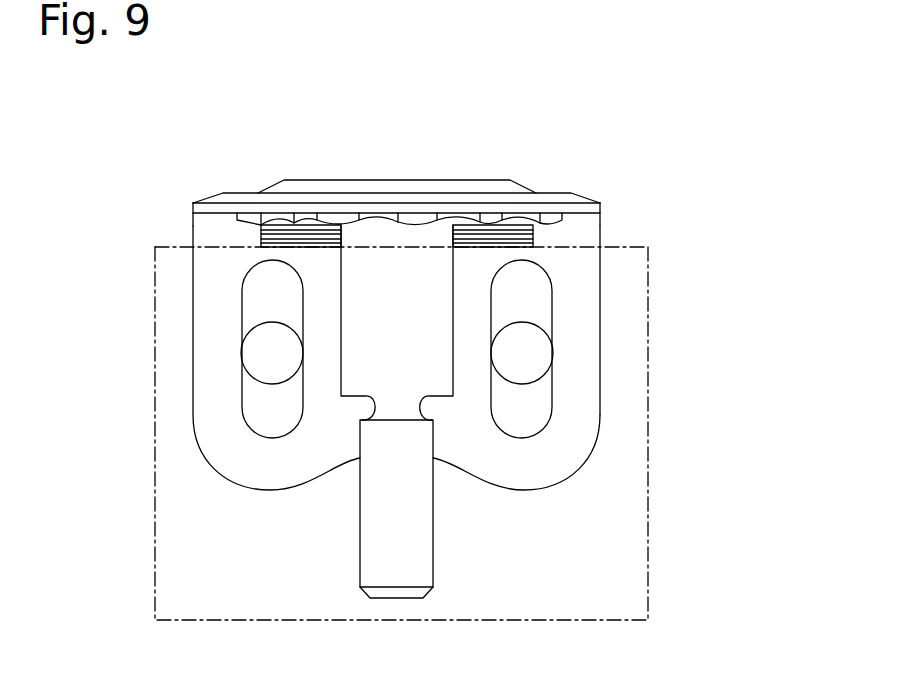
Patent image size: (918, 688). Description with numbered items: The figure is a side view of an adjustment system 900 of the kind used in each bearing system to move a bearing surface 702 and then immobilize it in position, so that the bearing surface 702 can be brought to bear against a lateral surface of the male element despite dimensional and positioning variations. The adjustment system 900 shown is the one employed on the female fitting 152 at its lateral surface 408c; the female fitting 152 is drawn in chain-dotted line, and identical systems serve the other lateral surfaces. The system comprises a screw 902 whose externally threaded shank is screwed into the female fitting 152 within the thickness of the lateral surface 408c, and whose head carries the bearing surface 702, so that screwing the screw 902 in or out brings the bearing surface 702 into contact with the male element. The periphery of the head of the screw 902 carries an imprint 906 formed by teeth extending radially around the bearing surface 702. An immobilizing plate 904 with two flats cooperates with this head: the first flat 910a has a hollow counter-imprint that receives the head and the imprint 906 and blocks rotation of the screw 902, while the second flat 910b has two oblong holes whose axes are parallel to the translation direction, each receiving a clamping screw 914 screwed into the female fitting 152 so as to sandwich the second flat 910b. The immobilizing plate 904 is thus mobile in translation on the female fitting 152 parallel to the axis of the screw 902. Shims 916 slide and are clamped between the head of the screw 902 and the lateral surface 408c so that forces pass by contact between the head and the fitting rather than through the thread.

The adjustment system 900 is at (672, 202).
The bearing surface 702 is at (348, 180).
The first flat 910a is at (562, 200).
The imprint 906 is at (250, 218).
The shims 916 is at (270, 240).
The second flat 910b is at (208, 430).
The immobilizing plate 904 is at (585, 382).
The clamping screw 914 is at (263, 357).
The screw 902 is at (417, 550).
The female fitting 152 is at (630, 467).
The lateral surface 408c is at (630, 247).